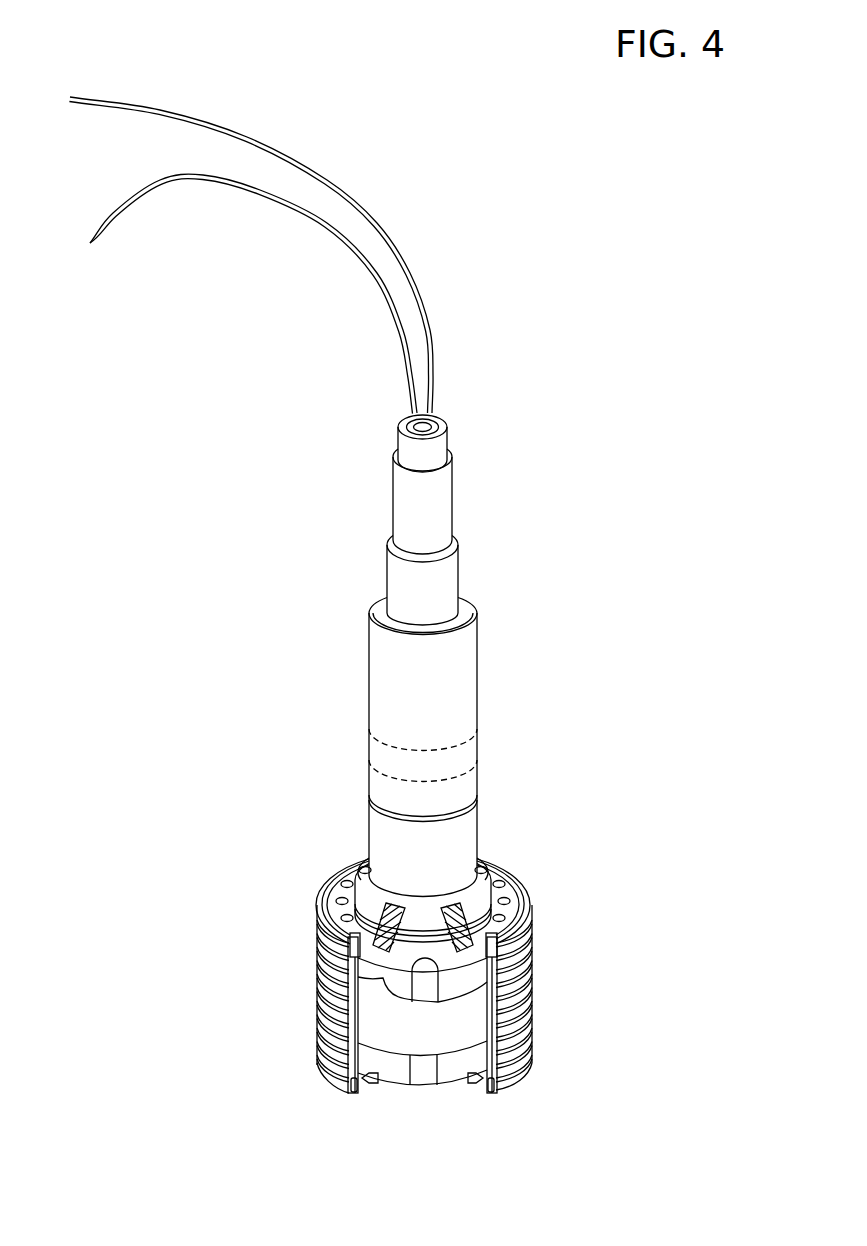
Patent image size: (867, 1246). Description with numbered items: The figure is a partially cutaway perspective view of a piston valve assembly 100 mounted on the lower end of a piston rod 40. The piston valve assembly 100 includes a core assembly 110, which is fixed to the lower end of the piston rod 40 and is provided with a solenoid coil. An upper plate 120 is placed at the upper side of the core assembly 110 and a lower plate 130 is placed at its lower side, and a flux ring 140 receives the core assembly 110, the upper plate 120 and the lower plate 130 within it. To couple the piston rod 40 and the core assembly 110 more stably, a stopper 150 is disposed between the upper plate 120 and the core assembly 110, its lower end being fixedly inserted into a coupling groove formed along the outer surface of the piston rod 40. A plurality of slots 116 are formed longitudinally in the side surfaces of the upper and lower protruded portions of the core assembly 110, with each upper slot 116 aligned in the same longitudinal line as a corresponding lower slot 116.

The piston rod 40 is at (480, 667).
The piston valve assembly 100 is at (650, 980).
The core assembly 110 is at (377, 1022).
The slot 116 is at (435, 962).
The upper plate 120 is at (325, 875).
The lower plate 130 is at (362, 1097).
The flux ring 140 is at (348, 1076).
The stopper 150 is at (532, 878).